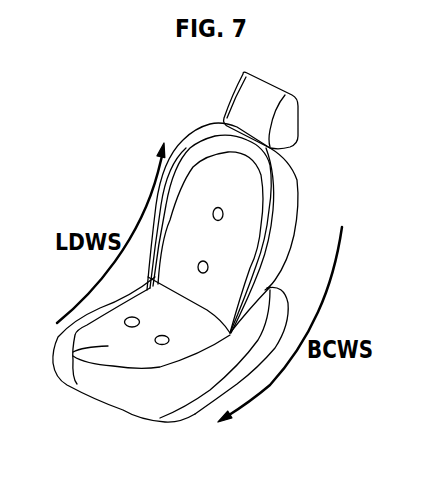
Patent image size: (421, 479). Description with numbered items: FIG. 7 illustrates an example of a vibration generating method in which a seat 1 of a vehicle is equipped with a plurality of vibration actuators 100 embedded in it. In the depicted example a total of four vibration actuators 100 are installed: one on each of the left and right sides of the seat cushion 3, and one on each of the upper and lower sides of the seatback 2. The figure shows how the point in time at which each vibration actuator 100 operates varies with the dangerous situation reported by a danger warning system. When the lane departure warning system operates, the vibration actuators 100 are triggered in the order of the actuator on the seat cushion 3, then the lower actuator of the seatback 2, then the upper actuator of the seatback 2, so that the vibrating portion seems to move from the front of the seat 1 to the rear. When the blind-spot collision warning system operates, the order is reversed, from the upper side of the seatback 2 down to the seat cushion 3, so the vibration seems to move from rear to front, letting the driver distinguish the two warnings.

The seat 1 is at (208, 264).
The seatback 2 is at (205, 150).
The seat cushion 3 is at (72, 383).
The vibration actuators 100 is at (219, 221).